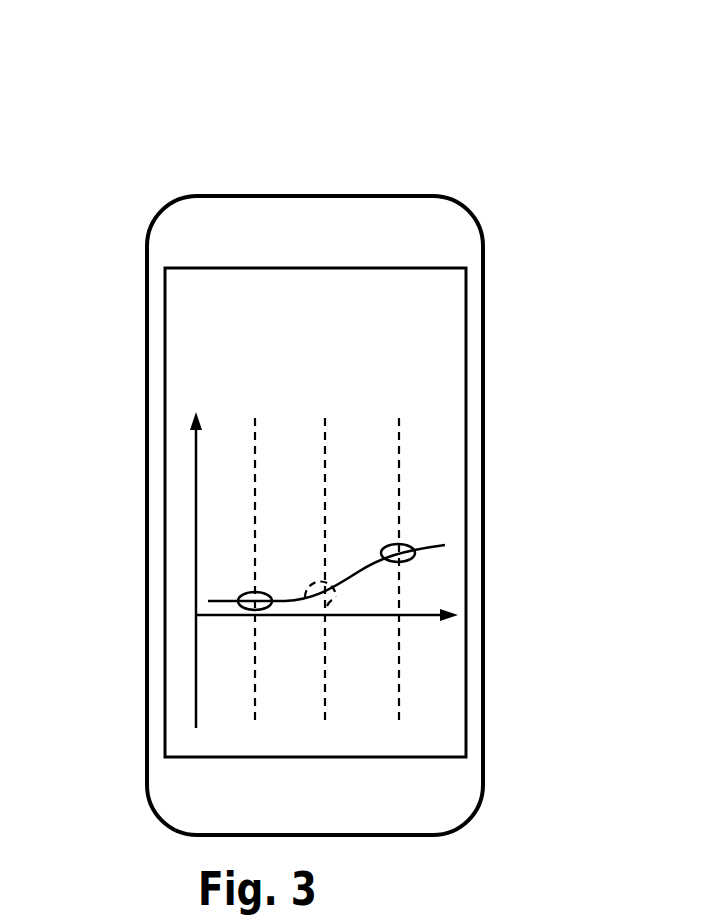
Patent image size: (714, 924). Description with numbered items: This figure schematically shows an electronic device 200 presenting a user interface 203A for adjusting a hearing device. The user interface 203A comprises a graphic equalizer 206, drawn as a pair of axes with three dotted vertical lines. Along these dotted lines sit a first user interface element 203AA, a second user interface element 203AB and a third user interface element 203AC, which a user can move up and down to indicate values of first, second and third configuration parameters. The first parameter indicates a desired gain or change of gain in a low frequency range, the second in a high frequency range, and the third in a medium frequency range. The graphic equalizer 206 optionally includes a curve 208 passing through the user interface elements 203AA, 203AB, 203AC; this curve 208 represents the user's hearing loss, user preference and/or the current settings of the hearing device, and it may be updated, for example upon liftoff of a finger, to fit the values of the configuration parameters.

The electronic device 200 is at (207, 122).
The user interface 203A is at (180, 309).
The graphic equalizer 206 is at (237, 405).
The curve 208 is at (358, 573).
The first user interface element 203AA is at (241, 607).
The second user interface element 203AB is at (413, 551).
The third user interface element 203AC is at (338, 601).